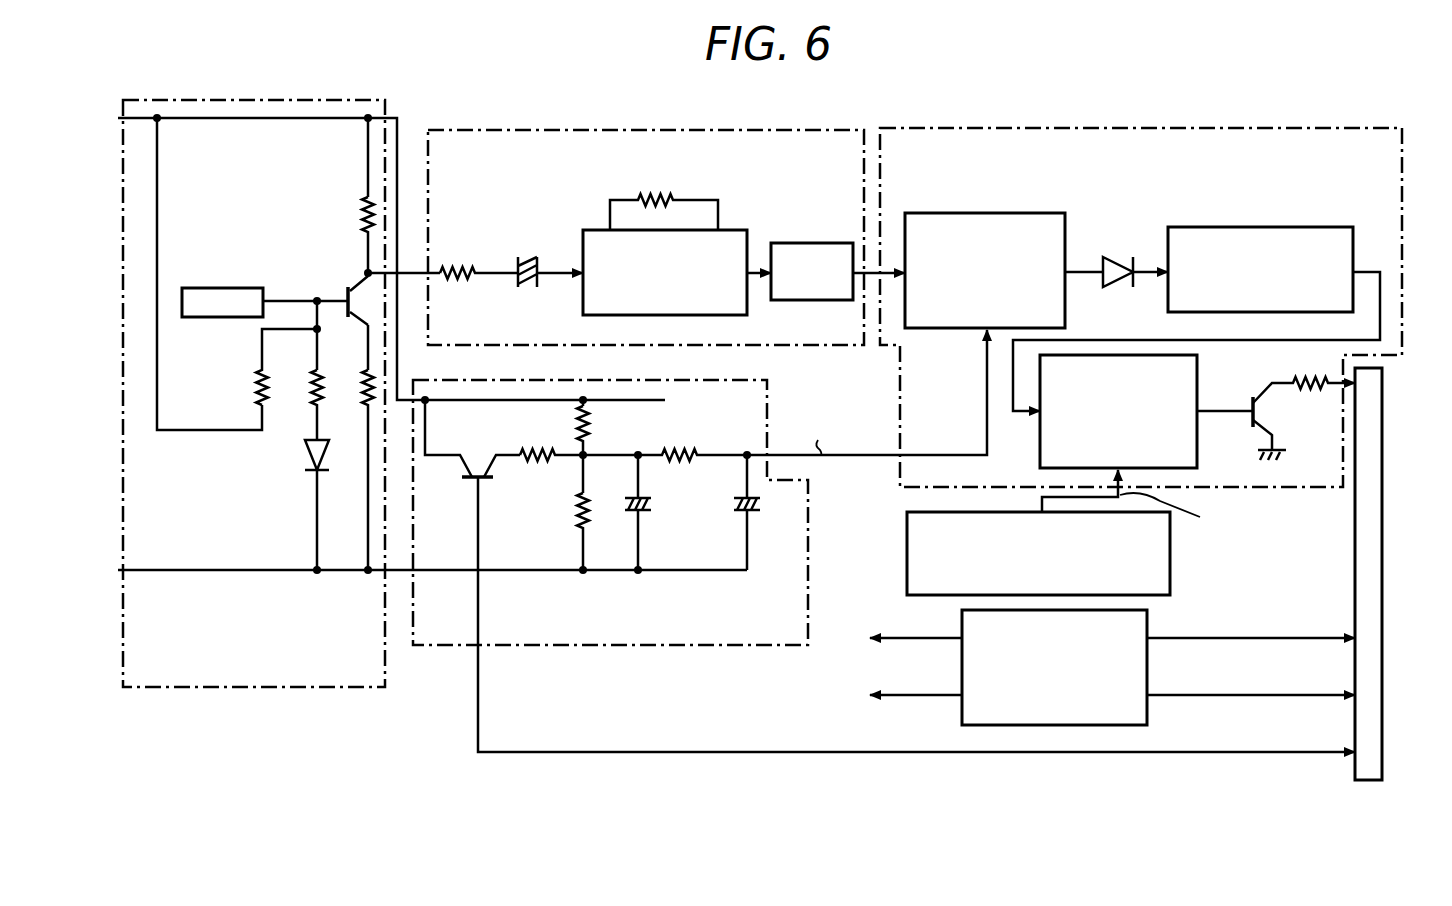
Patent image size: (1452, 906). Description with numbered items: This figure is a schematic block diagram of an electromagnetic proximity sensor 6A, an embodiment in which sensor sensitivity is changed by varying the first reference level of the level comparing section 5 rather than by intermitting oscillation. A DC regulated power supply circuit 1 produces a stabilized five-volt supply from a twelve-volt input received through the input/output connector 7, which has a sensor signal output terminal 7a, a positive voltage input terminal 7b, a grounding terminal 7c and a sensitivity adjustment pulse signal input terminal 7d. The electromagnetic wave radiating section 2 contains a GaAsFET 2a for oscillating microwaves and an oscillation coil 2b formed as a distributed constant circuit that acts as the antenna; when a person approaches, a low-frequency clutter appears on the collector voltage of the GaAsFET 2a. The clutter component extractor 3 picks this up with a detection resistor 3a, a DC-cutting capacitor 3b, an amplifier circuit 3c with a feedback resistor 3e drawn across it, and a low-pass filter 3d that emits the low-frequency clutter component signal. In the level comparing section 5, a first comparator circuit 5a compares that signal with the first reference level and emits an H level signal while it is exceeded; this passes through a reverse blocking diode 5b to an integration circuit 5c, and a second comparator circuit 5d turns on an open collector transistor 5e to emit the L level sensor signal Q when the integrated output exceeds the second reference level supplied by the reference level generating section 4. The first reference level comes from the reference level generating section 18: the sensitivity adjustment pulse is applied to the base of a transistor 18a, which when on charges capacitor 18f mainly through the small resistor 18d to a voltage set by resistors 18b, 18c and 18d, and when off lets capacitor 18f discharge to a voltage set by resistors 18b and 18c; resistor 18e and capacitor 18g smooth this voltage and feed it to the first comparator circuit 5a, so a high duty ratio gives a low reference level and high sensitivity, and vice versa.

The DC regulated power supply circuit 1 is at (1150, 622).
The electromagnetic wave radiating section 2 is at (171, 686).
The GaAsFET 2a is at (348, 291).
The oscillation coil 2b is at (201, 288).
The clutter component extractor 3 is at (816, 128).
The detection resistor 3a is at (467, 263).
The capacitor 3b is at (528, 254).
The amplifier circuit 3c is at (738, 230).
The low-pass filter 3d is at (844, 243).
The feedback resistor 3e is at (640, 196).
The reference level generating section 4 is at (906, 535).
The level comparing section 5 is at (1358, 128).
The first comparator circuit 5a is at (1042, 213).
The reverse blocking diode 5b is at (1118, 258).
The integration circuit 5c is at (1342, 227).
The second comparator circuit 5d is at (1197, 372).
The open collector transistor 5e is at (1268, 389).
The electromagnetic proximity sensor 6A is at (785, 475).
The input/output connector 7 is at (1360, 780).
The sensor signal output terminal 7a is at (1367, 400).
The +voltage input terminal 7b is at (1356, 628).
The grounding terminal 7c is at (1356, 686).
The sensitivity adjustment pulse signal input terminal 7d is at (1356, 744).
The reference level generating section 18 is at (558, 646).
The transistor 18a is at (472, 468).
The resistor 18b is at (587, 430).
The resistor 18c is at (577, 507).
The resistor 18d is at (548, 450).
The resistor 18e is at (680, 451).
The capacitor 18f is at (648, 513).
The capacitor 18g is at (734, 506).